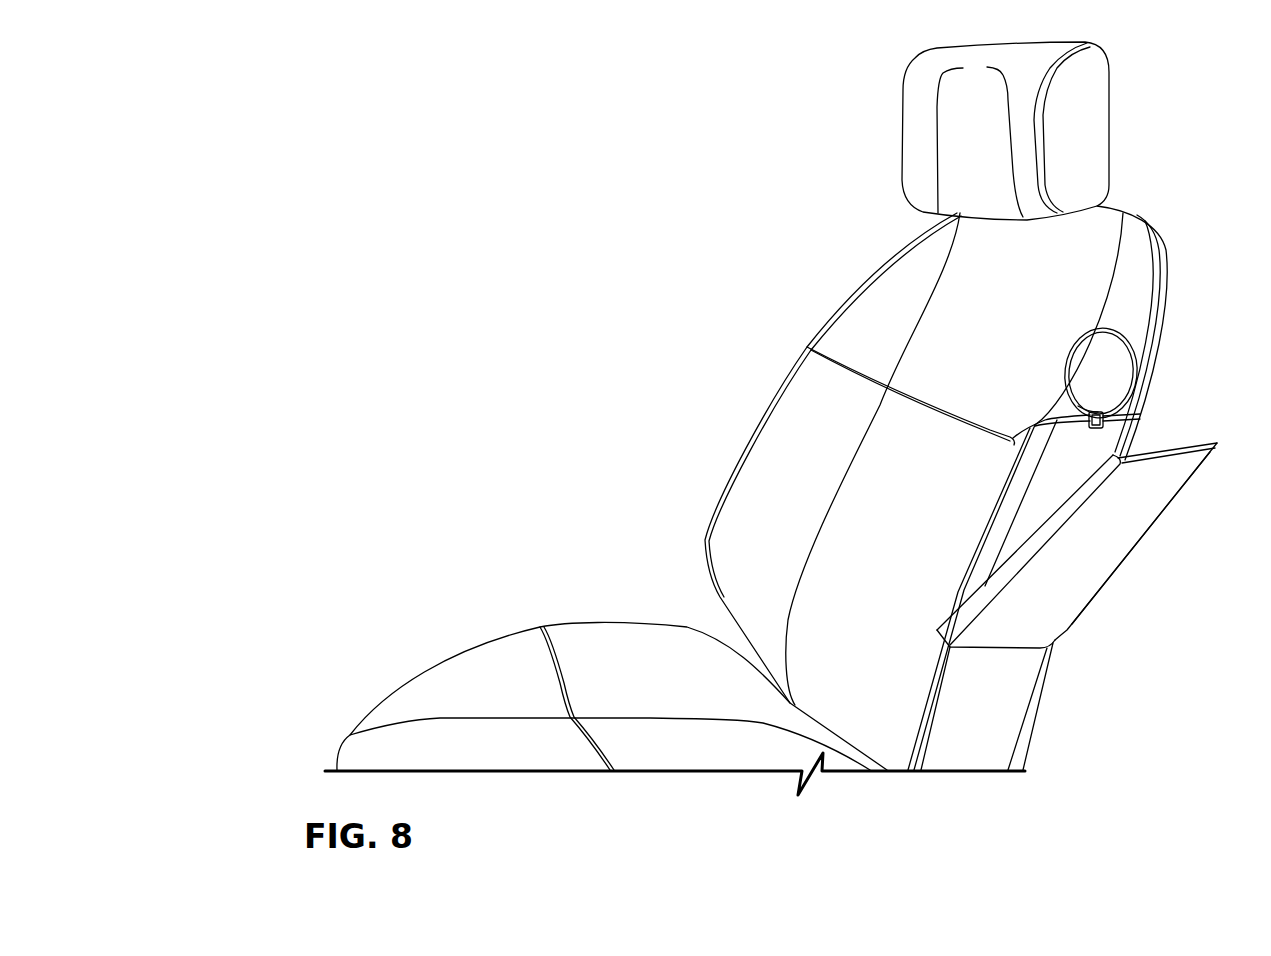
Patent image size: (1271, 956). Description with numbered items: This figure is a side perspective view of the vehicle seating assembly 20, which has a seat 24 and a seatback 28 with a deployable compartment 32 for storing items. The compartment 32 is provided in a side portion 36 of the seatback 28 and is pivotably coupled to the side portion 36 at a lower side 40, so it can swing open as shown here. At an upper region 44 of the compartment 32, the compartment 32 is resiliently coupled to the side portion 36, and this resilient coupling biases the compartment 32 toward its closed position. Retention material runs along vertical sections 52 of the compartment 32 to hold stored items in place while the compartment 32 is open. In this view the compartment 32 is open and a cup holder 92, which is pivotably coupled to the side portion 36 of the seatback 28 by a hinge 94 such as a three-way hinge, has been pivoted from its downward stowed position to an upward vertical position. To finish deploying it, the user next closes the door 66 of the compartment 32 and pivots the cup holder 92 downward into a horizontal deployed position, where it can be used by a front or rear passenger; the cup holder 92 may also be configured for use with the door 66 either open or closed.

The vehicle seating assembly 20 is at (573, 318).
The seat 24 is at (618, 650).
The seatback 28 is at (973, 297).
The compartment 32 is at (1102, 545).
The side portion 36 is at (1123, 280).
The lower side 40 is at (998, 650).
The upper region 44 is at (1065, 390).
The vertical sections 52 is at (983, 548).
The door 66 is at (1157, 515).
The cup holder 92 is at (1128, 345).
The hinge 94 is at (1168, 422).